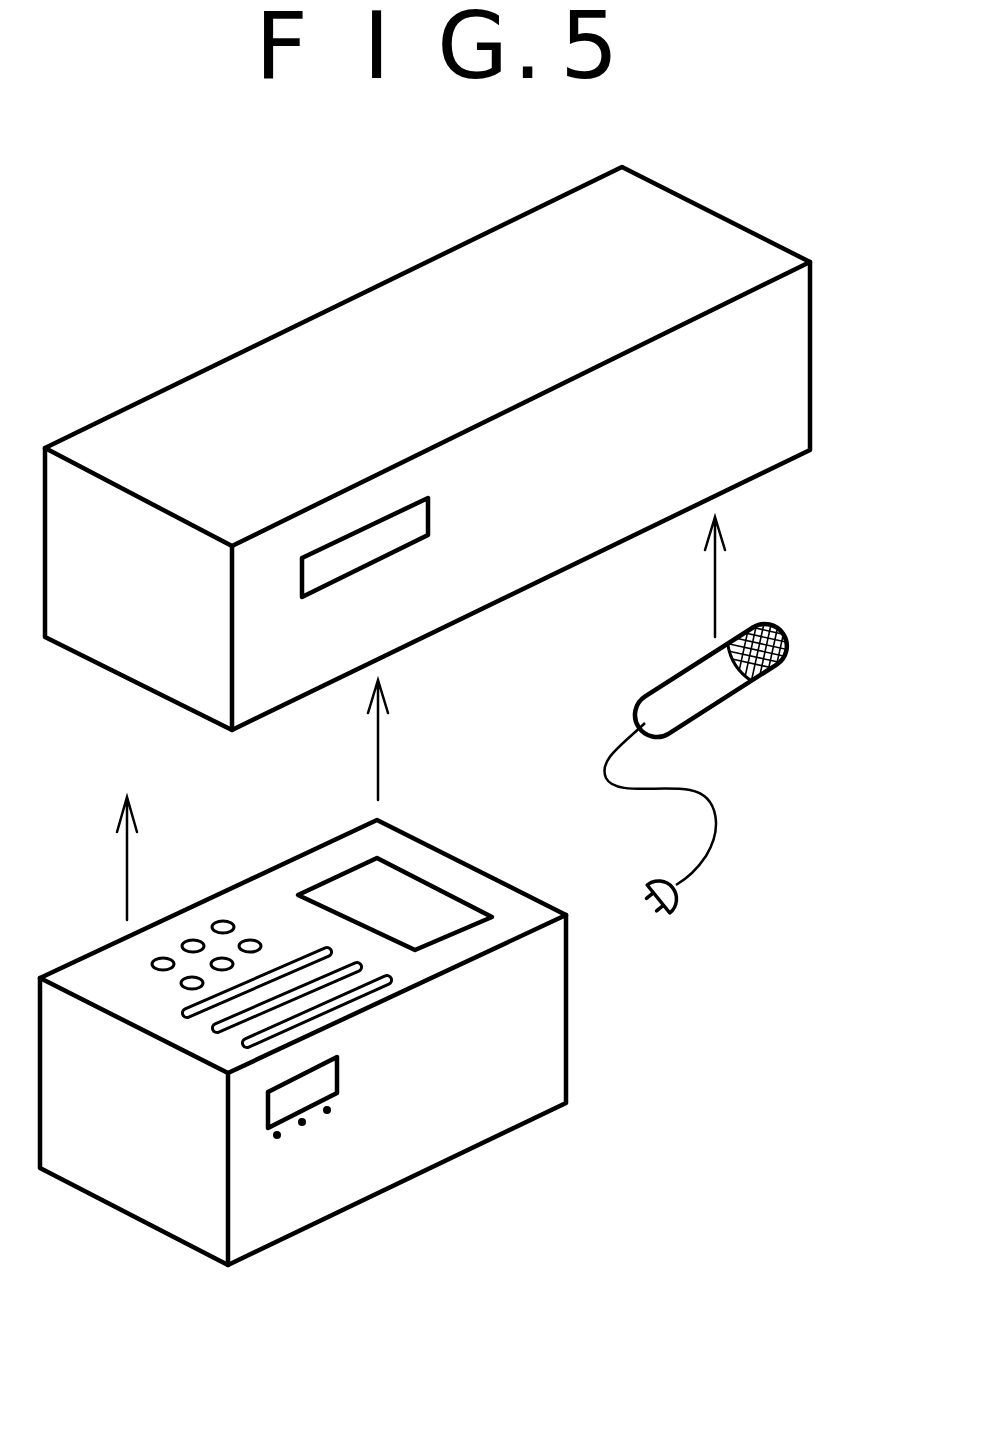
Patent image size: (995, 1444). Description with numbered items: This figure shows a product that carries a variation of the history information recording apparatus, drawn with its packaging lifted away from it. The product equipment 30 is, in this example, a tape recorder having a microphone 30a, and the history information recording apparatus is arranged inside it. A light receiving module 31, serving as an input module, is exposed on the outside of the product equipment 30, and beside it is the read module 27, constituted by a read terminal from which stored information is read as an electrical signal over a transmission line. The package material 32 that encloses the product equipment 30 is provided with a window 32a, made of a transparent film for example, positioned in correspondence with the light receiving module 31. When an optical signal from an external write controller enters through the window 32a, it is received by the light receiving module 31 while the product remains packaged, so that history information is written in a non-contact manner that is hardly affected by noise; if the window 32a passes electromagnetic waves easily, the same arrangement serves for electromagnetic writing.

The package material 32 is at (293, 363).
The window 32a is at (365, 545).
The microphone 30a is at (705, 692).
The product equipment 30 is at (137, 1192).
The light receiving module 31 is at (323, 1077).
The read module 27 is at (302, 1125).